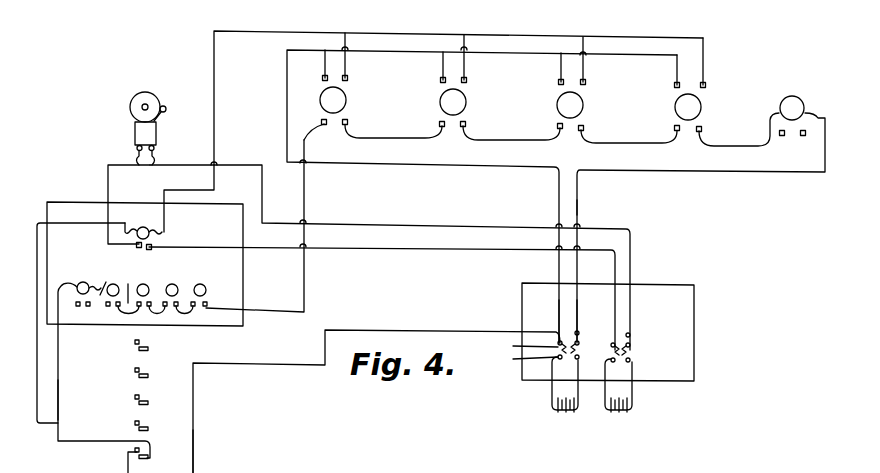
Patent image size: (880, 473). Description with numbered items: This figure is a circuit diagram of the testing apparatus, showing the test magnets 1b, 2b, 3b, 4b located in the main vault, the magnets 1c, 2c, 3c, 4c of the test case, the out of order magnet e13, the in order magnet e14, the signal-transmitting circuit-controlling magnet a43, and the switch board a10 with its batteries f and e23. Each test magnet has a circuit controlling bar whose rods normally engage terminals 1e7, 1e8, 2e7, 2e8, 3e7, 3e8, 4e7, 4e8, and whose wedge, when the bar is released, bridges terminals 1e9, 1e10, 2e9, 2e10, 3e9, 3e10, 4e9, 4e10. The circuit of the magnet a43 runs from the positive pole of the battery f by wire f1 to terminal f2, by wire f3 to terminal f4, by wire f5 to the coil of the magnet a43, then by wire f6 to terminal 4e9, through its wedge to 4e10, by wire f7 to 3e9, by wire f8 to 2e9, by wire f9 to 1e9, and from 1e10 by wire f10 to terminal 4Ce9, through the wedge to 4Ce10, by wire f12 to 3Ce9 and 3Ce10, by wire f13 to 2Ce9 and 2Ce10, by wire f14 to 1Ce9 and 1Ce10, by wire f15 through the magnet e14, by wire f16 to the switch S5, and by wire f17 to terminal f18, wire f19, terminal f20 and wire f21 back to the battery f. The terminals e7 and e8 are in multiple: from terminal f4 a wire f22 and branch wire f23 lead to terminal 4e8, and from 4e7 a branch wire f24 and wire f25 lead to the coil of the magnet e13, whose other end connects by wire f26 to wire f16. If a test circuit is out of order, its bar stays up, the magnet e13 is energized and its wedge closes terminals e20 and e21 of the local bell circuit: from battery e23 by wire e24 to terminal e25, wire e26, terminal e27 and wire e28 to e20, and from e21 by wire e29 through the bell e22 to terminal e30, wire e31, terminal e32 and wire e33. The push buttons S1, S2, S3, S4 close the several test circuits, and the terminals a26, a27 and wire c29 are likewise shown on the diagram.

The bell e22 is at (149, 136).
The wire f25 is at (626, 38).
The branch wire f24 is at (704, 53).
The branch wire f23 is at (702, 64).
The wire f22 is at (284, 93).
The circuit terminal 1e8 is at (322, 80).
The circuit terminal 1e7 is at (348, 79).
The circuit terminal 2e8 is at (440, 81).
The circuit terminal 2e7 is at (467, 81).
The circuit terminal 3e8 is at (558, 83).
The circuit terminal 3e7 is at (586, 83).
The circuit terminal 4e8 is at (674, 85).
The circuit terminal 4e7 is at (706, 85).
The electro-magnet 1b is at (333, 100).
The electro-magnet 2b is at (453, 102).
The electro-magnet 3b is at (570, 105).
The electro-magnet 4b is at (688, 107).
The circuit terminal 1e10 is at (321, 122).
The circuit terminal 1e9 is at (348, 123).
The circuit terminal 2e10 is at (440, 125).
The circuit terminal 2e9 is at (466, 125).
The circuit terminal 3e10 is at (557, 127).
The circuit terminal 3e9 is at (584, 128).
The circuit terminal 4e10 is at (674, 128).
The circuit terminal 4e9 is at (702, 130).
The wire f9 is at (403, 139).
The wire f8 is at (512, 141).
The wire f7 is at (639, 144).
The wire f6 is at (738, 147).
The wire f5 is at (578, 207).
The signal-transmitting circuit-controlling magnet a43 is at (792, 100).
The terminal a27 is at (781, 136).
The terminal a26 is at (803, 136).
The wire e29 is at (108, 190).
The wire c29 is at (263, 190).
The wire e28 is at (487, 255).
The wire f10 is at (304, 277).
The out of order magnet e13 is at (143, 227).
The wire f26 is at (72, 222).
The circuit terminal e21 is at (139, 248).
The circuit terminal e20 is at (149, 250).
The in order magnet e14 is at (83, 282).
The wire f15 is at (103, 281).
The wire f14 is at (131, 283).
The magnet 1c is at (113, 290).
The magnet 2c is at (143, 290).
The magnet 3c is at (172, 290).
The magnet 4c is at (200, 290).
The circuit terminal 1Ce10 is at (108, 306).
The circuit terminal 1Ce9 is at (118, 306).
The circuit terminal 2Ce9 is at (149, 302).
The circuit terminal 2Ce10 is at (146, 314).
The circuit terminal 3Ce9 is at (178, 302).
The circuit terminal 3Ce10 is at (166, 306).
The wire f12 is at (182, 319).
The circuit terminal 4Ce9 is at (206, 305).
The circuit terminal 4Ce10 is at (193, 306).
The wire f13 is at (149, 336).
The push button S1 is at (150, 350).
The push button S2 is at (150, 377).
The push button S3 is at (150, 404).
The push button S4 is at (150, 430).
The switch S5 is at (150, 457).
The wire f16 is at (58, 397).
The wire f17 is at (194, 449).
The switch board a10 is at (695, 342).
The battery f is at (565, 398).
The battery e23 is at (619, 400).
The wire e26 is at (579, 349).
The terminal e25 is at (600, 361).
The terminal e27 is at (613, 343).
The wire e31 is at (630, 346).
The terminal e32 is at (630, 361).
The terminal e30 is at (631, 344).
The terminal f2 is at (565, 371).
The wire f1 is at (566, 390).
The wire e24 is at (593, 397).
The wire e33 is at (634, 395).
The terminal f4 is at (570, 342).
The wire f3 is at (582, 333).
The terminal f18 is at (524, 348).
The wire f19 is at (524, 361).
The terminal f20 is at (552, 393).
The wire f21 is at (515, 414).